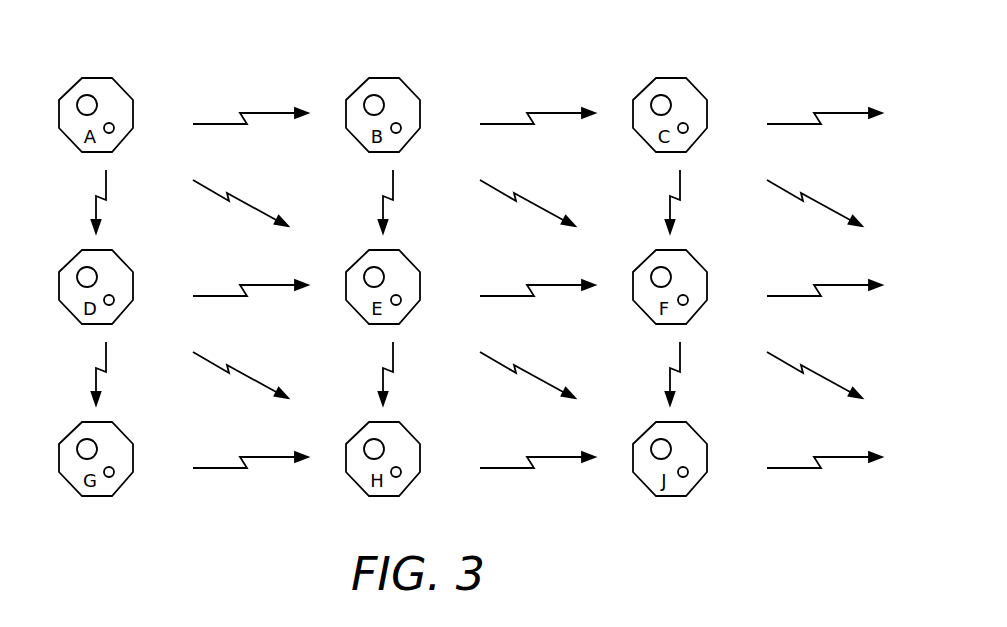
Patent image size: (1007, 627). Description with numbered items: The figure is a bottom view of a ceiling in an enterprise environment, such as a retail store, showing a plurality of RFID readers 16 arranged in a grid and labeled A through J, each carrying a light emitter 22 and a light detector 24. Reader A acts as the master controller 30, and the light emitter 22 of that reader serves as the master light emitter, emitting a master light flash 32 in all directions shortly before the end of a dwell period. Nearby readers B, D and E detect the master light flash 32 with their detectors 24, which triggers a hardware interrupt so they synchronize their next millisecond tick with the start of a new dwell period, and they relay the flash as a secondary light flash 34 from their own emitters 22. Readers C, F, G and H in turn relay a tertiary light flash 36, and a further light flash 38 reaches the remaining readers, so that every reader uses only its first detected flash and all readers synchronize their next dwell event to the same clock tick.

The RFID reader 16 is at (387, 292).
The light emitter 22 is at (426, 307).
The light detector 24 is at (349, 261).
The master controller 30 is at (97, 78).
The master light flash 32 is at (200, 158).
The light flash 34 is at (344, 244).
The light flash 36 is at (537, 276).
The light flash 38 is at (824, 448).